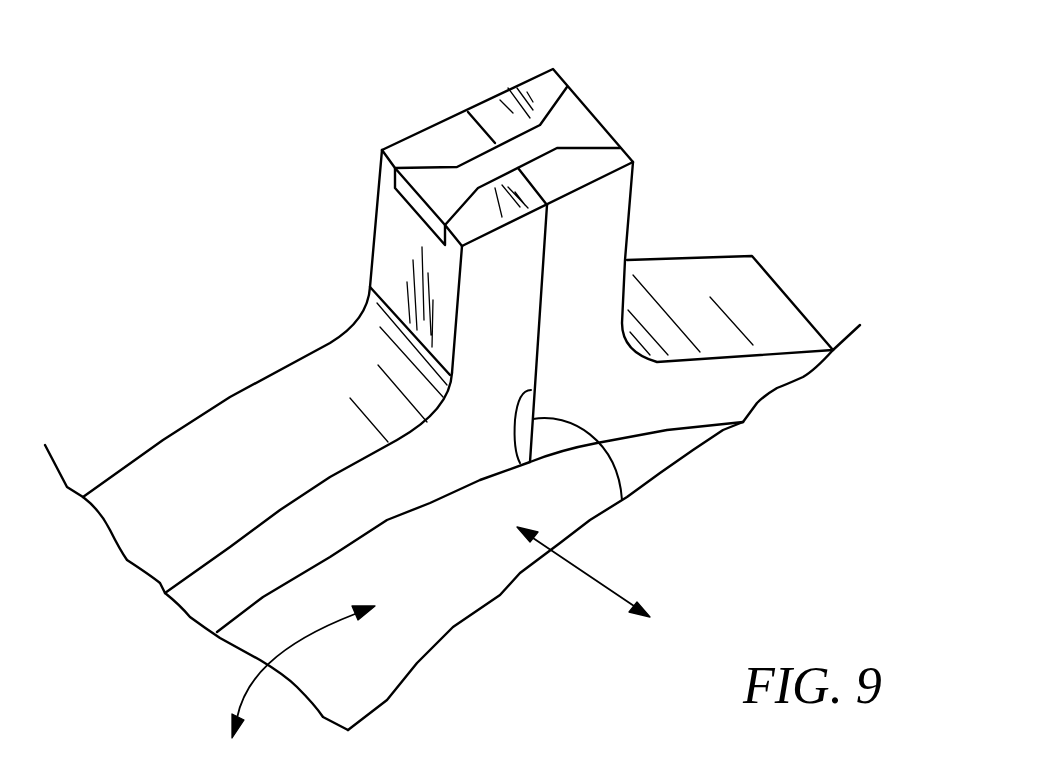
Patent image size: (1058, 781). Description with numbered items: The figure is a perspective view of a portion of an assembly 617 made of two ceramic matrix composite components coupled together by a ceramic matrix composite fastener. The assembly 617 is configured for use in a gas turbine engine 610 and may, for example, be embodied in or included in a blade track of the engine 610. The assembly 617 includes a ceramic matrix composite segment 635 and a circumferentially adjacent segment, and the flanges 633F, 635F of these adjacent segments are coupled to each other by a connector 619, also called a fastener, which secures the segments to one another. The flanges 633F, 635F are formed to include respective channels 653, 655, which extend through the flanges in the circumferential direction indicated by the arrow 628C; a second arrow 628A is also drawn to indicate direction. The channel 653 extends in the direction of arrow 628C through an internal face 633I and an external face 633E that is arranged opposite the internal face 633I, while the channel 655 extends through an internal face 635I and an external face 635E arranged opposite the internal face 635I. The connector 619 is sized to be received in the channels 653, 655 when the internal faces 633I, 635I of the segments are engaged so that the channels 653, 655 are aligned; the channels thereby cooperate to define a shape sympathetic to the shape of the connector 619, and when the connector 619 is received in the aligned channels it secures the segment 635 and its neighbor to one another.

The gas turbine engine 610 is at (868, 45).
The assembly 617 is at (835, 143).
The connector 619 is at (590, 95).
The channel 653 is at (635, 146).
The channel 655 is at (412, 145).
The external face 633E is at (633, 208).
The flange 633F is at (506, 62).
The internal face 633I is at (622, 500).
The ceramic matrix composite segment 635 is at (152, 445).
The external face 635E is at (370, 262).
The flange 635F is at (414, 104).
The internal face 635I is at (520, 463).
The arrow 628A is at (565, 562).
The arrow 628C is at (315, 634).